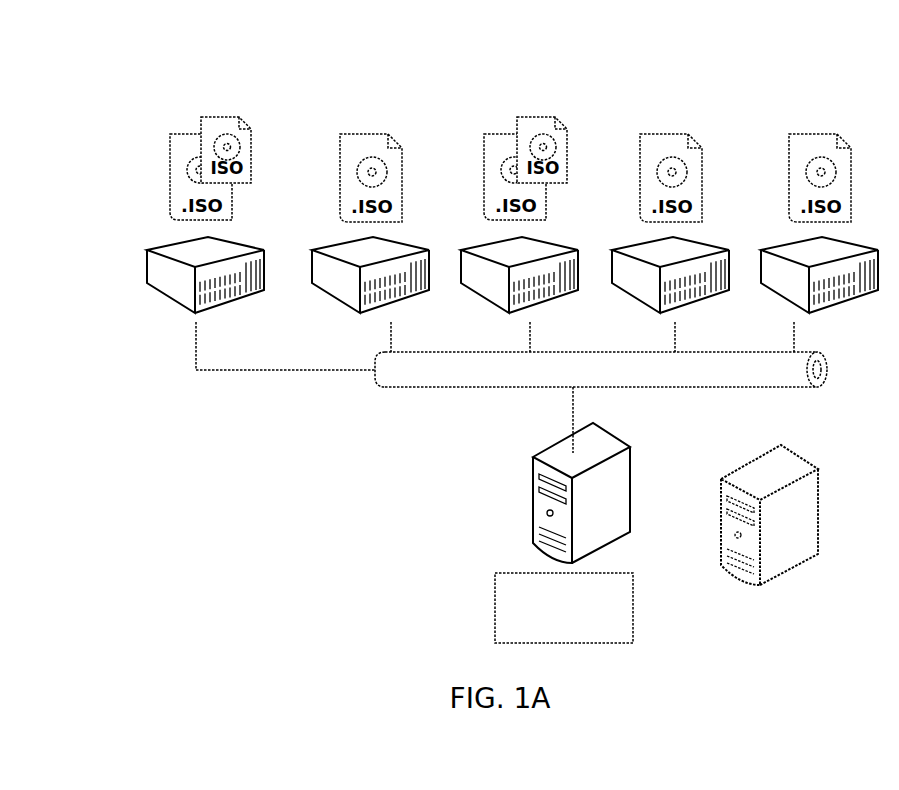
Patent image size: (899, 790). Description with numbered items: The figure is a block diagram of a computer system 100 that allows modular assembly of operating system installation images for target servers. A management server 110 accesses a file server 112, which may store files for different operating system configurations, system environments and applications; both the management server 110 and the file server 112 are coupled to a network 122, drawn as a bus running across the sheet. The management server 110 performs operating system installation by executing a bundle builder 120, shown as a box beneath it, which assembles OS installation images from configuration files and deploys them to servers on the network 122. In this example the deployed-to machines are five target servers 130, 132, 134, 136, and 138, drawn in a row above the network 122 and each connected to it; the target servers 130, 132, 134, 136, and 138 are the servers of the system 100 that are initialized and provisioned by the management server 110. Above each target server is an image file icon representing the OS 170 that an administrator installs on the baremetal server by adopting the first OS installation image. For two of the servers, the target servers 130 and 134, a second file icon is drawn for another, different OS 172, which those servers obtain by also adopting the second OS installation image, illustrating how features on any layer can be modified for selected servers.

The computer system 100 is at (131, 59).
The management server 110 is at (536, 484).
The file server 112 is at (724, 508).
The bundle builder 120 is at (494, 607).
The network 122 is at (428, 389).
The target server 130 is at (150, 248).
The target server 132 is at (315, 248).
The target server 134 is at (464, 248).
The target server 136 is at (615, 248).
The target server 138 is at (764, 248).
The OS 170 is at (195, 133).
The OS 172 is at (222, 116).